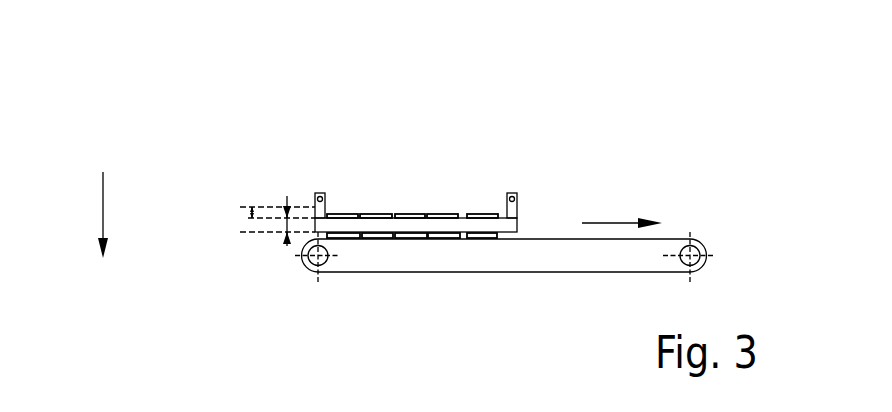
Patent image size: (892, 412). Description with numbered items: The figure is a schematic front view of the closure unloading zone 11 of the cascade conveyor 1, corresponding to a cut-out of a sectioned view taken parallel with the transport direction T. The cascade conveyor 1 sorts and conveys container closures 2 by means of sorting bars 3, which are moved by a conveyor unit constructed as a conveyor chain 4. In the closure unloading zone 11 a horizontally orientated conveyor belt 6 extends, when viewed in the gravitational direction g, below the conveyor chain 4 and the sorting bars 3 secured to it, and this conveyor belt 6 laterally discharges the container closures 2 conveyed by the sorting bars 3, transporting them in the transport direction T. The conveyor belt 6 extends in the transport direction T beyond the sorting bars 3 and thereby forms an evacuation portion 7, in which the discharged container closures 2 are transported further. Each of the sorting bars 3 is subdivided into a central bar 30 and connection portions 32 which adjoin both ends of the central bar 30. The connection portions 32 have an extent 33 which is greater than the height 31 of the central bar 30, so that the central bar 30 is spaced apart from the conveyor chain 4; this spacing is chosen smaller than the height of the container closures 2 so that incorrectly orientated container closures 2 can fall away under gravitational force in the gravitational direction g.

The cascade conveyor 1 is at (240, 88).
The sorting bars 3 is at (373, 142).
The conveyor chain 4 is at (318, 193).
The connection portions 32 is at (518, 211).
The central bar 30 is at (407, 214).
The container closures 2 is at (487, 213).
The extent 33 is at (250, 220).
The height 31 is at (285, 226).
The closure unloading zone 11 is at (530, 123).
The evacuation portion 7 is at (645, 162).
The conveyor belt 6 is at (672, 246).
The transport direction T is at (622, 223).
The gravitational direction g is at (103, 207).